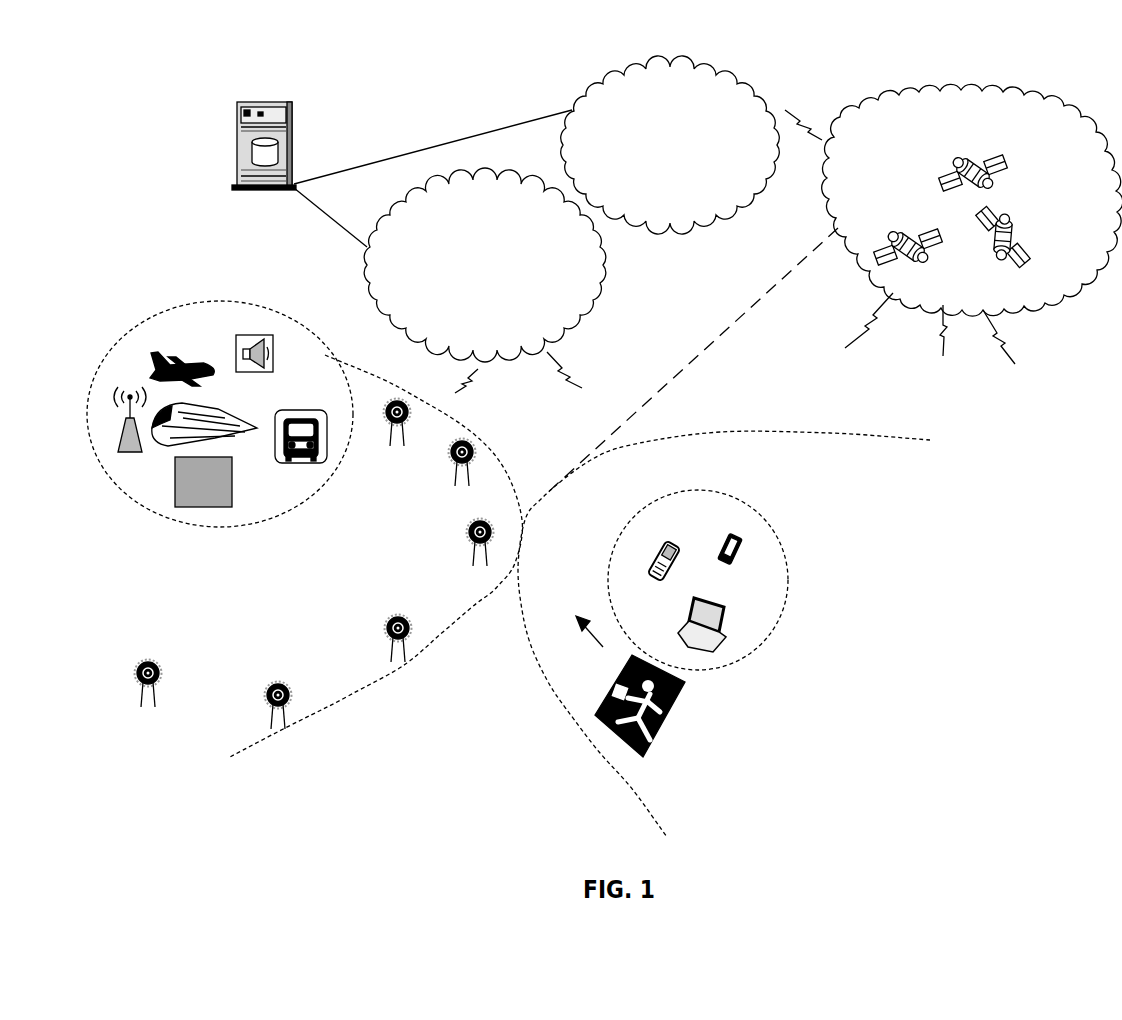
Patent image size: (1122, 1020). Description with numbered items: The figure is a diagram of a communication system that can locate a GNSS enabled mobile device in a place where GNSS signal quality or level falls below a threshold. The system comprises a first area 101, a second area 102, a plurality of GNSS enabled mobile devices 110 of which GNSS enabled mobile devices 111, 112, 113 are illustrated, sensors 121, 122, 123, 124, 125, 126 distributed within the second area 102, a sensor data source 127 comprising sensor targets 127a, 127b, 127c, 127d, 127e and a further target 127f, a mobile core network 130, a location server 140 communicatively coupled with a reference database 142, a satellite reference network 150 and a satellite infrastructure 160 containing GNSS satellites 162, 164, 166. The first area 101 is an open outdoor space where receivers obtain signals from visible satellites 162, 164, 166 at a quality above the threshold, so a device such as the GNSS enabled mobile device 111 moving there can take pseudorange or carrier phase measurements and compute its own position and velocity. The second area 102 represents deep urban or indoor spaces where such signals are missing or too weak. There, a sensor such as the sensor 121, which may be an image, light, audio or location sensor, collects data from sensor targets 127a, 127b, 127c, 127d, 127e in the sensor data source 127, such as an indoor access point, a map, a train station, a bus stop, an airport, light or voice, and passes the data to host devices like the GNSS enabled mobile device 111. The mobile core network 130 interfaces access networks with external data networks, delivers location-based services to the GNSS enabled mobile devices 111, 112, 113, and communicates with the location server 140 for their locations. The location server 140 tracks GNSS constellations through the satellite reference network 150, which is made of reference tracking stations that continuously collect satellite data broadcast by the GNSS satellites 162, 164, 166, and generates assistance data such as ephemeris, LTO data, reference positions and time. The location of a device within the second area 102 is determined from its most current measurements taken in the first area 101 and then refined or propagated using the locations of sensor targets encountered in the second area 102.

The first area 101 is at (925, 628).
The second area 102 is at (378, 578).
The plurality of GNSS enabled mobile devices 110 is at (703, 468).
The GNSS enabled mobile device 111 is at (694, 540).
The GNSS enabled mobile device 112 is at (754, 540).
The GNSS enabled mobile device 113 is at (750, 615).
The sensor 121 is at (159, 669).
The sensor 122 is at (290, 691).
The sensor 123 is at (407, 622).
The sensor 124 is at (482, 521).
The sensor 125 is at (473, 450).
The sensor 126 is at (406, 406).
The sensor data source 127 is at (143, 320).
The sensor target 127a is at (213, 364).
The sensor target 127b is at (227, 407).
The sensor target 127c is at (317, 410).
The sensor target 127d is at (133, 387).
The sensor target 127e is at (293, 352).
The image sensor data source 127f is at (253, 477).
The mobile core network 130 is at (606, 272).
The location server 140 is at (292, 104).
The reference database 142 is at (279, 150).
The satellite reference network (SRN) 150 is at (707, 96).
The satellite infrastructure 160 is at (1088, 162).
The GNSS satellite 162 is at (947, 227).
The GNSS satellite 164 is at (1013, 169).
The GNSS satellite 166 is at (1033, 254).